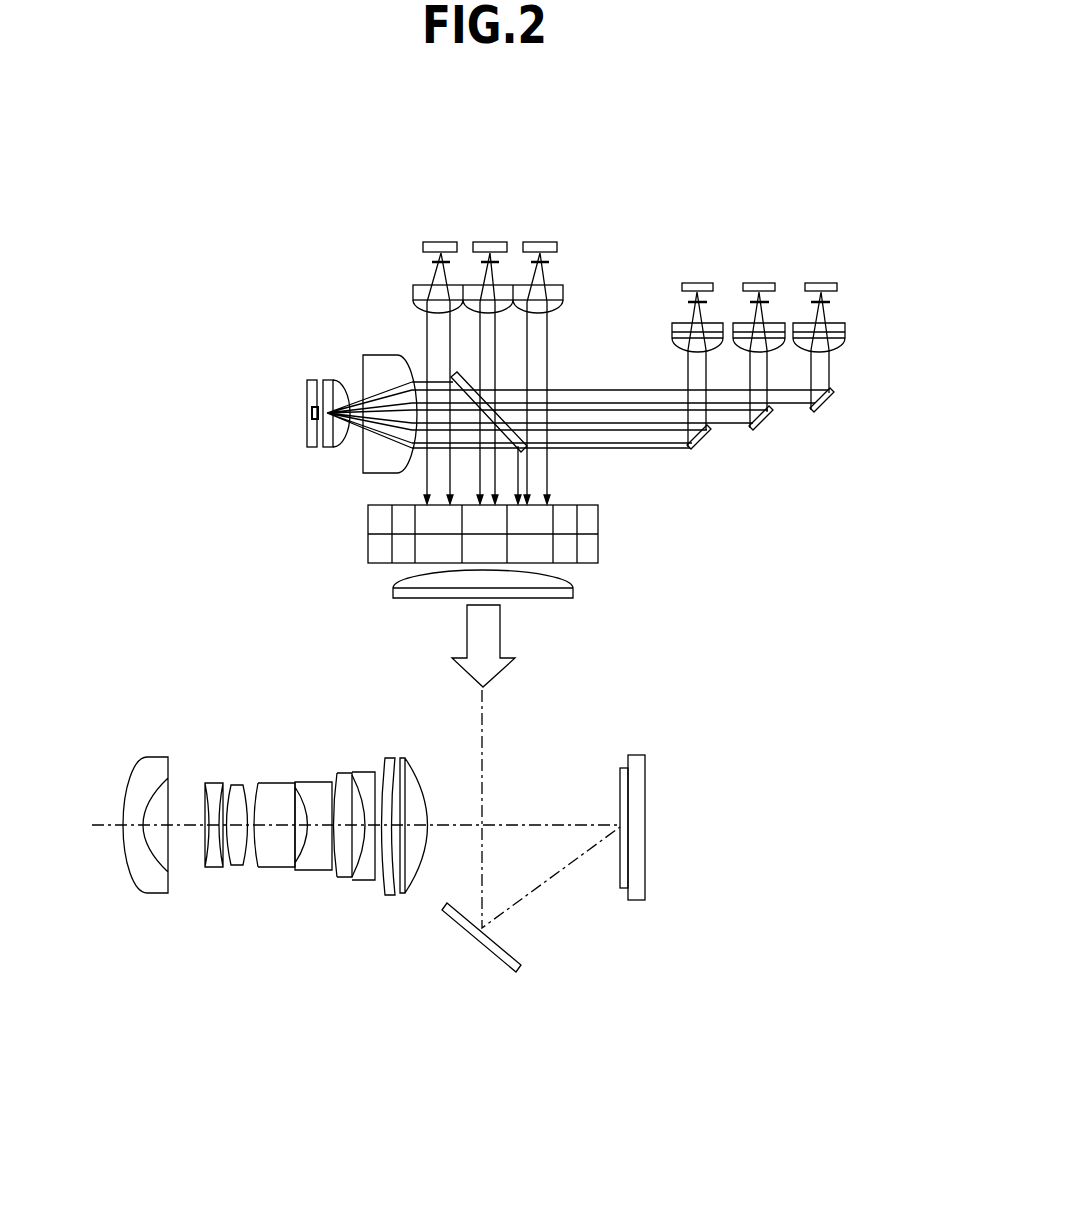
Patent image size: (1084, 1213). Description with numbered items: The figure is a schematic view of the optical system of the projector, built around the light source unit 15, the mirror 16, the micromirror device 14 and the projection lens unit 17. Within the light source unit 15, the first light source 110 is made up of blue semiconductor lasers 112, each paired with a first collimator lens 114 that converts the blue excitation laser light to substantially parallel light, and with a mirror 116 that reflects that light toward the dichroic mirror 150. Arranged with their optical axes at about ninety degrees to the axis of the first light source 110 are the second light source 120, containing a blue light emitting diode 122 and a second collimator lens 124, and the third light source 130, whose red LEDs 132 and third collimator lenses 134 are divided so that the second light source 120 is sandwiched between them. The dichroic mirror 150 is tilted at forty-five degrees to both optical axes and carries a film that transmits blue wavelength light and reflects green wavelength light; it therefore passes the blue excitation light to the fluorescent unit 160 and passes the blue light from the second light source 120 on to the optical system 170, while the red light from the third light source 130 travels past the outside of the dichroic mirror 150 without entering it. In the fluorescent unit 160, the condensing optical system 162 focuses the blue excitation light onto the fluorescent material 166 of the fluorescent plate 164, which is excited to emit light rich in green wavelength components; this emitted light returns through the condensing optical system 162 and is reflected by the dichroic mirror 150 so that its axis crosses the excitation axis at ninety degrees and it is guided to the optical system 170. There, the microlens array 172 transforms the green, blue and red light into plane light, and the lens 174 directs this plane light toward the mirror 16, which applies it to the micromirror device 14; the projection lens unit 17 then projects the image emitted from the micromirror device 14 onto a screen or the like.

The micromirror device 14 is at (640, 902).
The light source unit 15 is at (309, 242).
The mirror 16 is at (505, 971).
The projection lens unit 17 is at (433, 903).
The first light source 110 is at (841, 226).
The blue semiconductor laser 112 is at (820, 283).
The first collimator lens 114 is at (672, 332).
The mirror 116 is at (704, 449).
The second light source 120 is at (490, 196).
The blue light emitting diode 122 is at (508, 244).
The second collimator lens 124 is at (474, 285).
The third light source 130 is at (431, 196).
The red LED 132 is at (423, 247).
The third collimator lens 134 is at (413, 291).
The dichroic mirror 150 is at (529, 453).
The fluorescent unit 160 is at (227, 450).
The condensing optical system 162 is at (402, 478).
The fluorescent plate 164 is at (304, 440).
The fluorescent material 166 is at (307, 411).
The optical system 170 is at (703, 560).
The microlens array 172 is at (598, 554).
The lens 174 is at (573, 593).